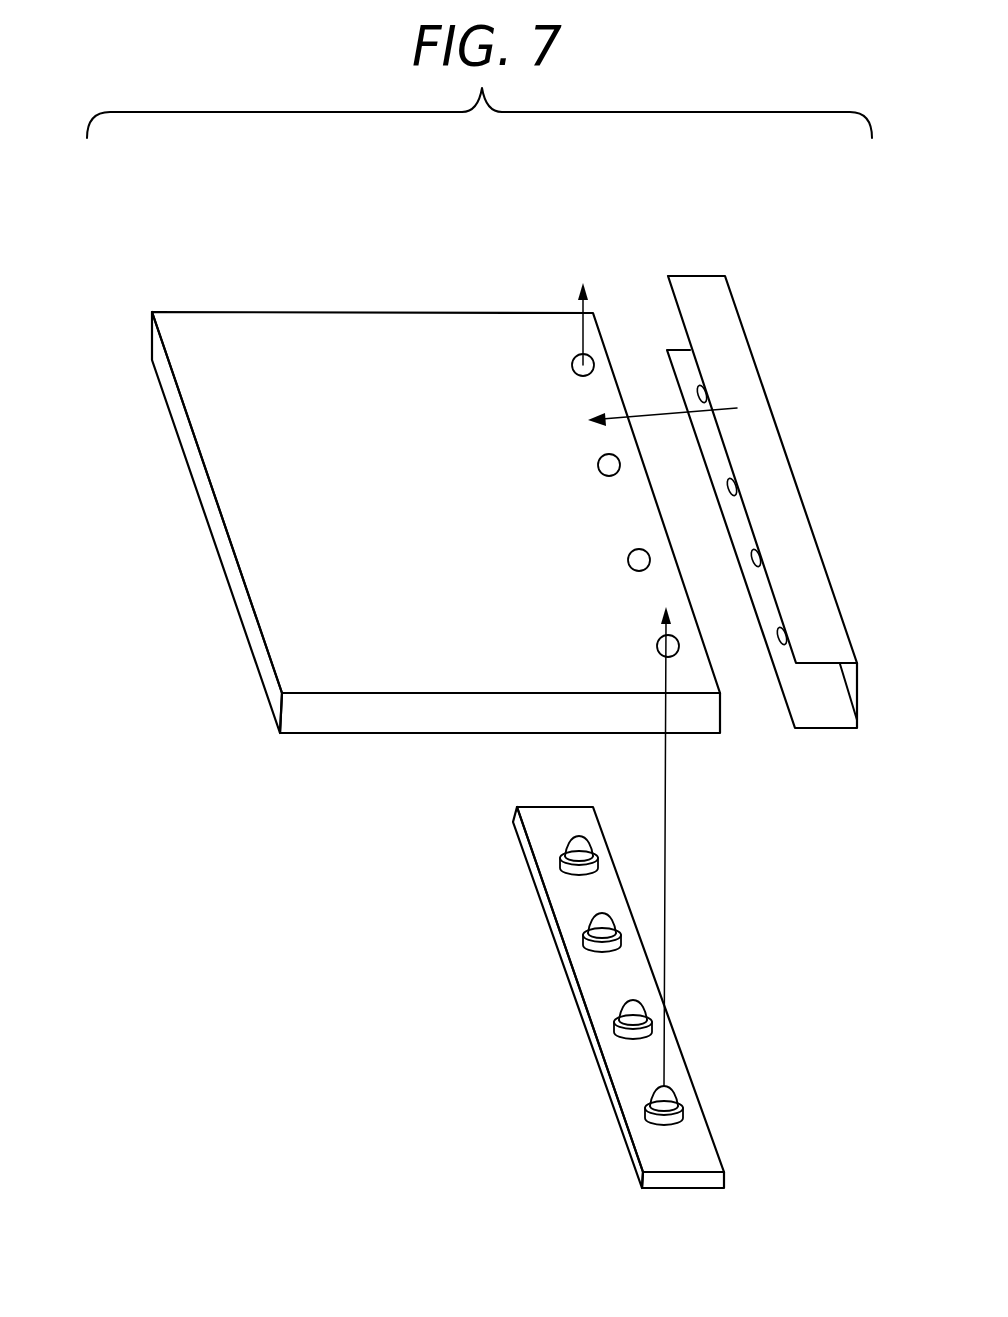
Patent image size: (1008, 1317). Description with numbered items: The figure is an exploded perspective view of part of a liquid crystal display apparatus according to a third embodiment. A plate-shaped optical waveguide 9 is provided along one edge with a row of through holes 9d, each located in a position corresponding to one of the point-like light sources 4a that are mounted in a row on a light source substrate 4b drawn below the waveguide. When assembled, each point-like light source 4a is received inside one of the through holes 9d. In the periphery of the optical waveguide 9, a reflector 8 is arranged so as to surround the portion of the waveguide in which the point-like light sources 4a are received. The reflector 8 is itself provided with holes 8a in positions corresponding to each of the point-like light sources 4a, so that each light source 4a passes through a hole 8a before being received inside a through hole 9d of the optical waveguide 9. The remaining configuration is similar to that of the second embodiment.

The optical waveguide 9 is at (357, 418).
The through holes 9d is at (572, 367).
The reflector 8 is at (723, 338).
The holes 8a is at (778, 641).
The point-like light sources 4a is at (588, 935).
The light source substrate 4b is at (637, 1152).